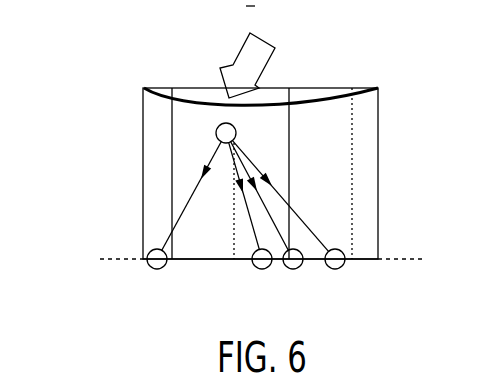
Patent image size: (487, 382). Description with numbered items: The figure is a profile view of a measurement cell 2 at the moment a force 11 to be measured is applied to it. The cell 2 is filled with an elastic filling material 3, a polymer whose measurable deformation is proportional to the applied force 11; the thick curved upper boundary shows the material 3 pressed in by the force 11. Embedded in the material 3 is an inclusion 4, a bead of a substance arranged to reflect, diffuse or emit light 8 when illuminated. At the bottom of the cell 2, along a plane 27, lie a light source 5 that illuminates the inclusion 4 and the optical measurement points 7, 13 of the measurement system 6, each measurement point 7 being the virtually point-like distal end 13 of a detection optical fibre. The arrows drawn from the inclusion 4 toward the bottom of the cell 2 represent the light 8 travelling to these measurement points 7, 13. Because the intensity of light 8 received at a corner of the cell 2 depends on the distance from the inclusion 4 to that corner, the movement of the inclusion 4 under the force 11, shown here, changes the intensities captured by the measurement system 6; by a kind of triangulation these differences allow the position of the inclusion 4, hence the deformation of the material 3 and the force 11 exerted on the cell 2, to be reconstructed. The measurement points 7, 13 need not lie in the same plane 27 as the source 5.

The cell 2 is at (405, 149).
The filling material 3 is at (327, 124).
The inclusion 4 is at (216, 131).
The light source 5 is at (259, 269).
The measurement system 6 is at (85, 262).
The optical measurement point 7 is at (155, 269).
The light 8 is at (190, 195).
The force 11 is at (241, 51).
The distal end 13 is at (330, 268).
The plane 27 is at (399, 257).